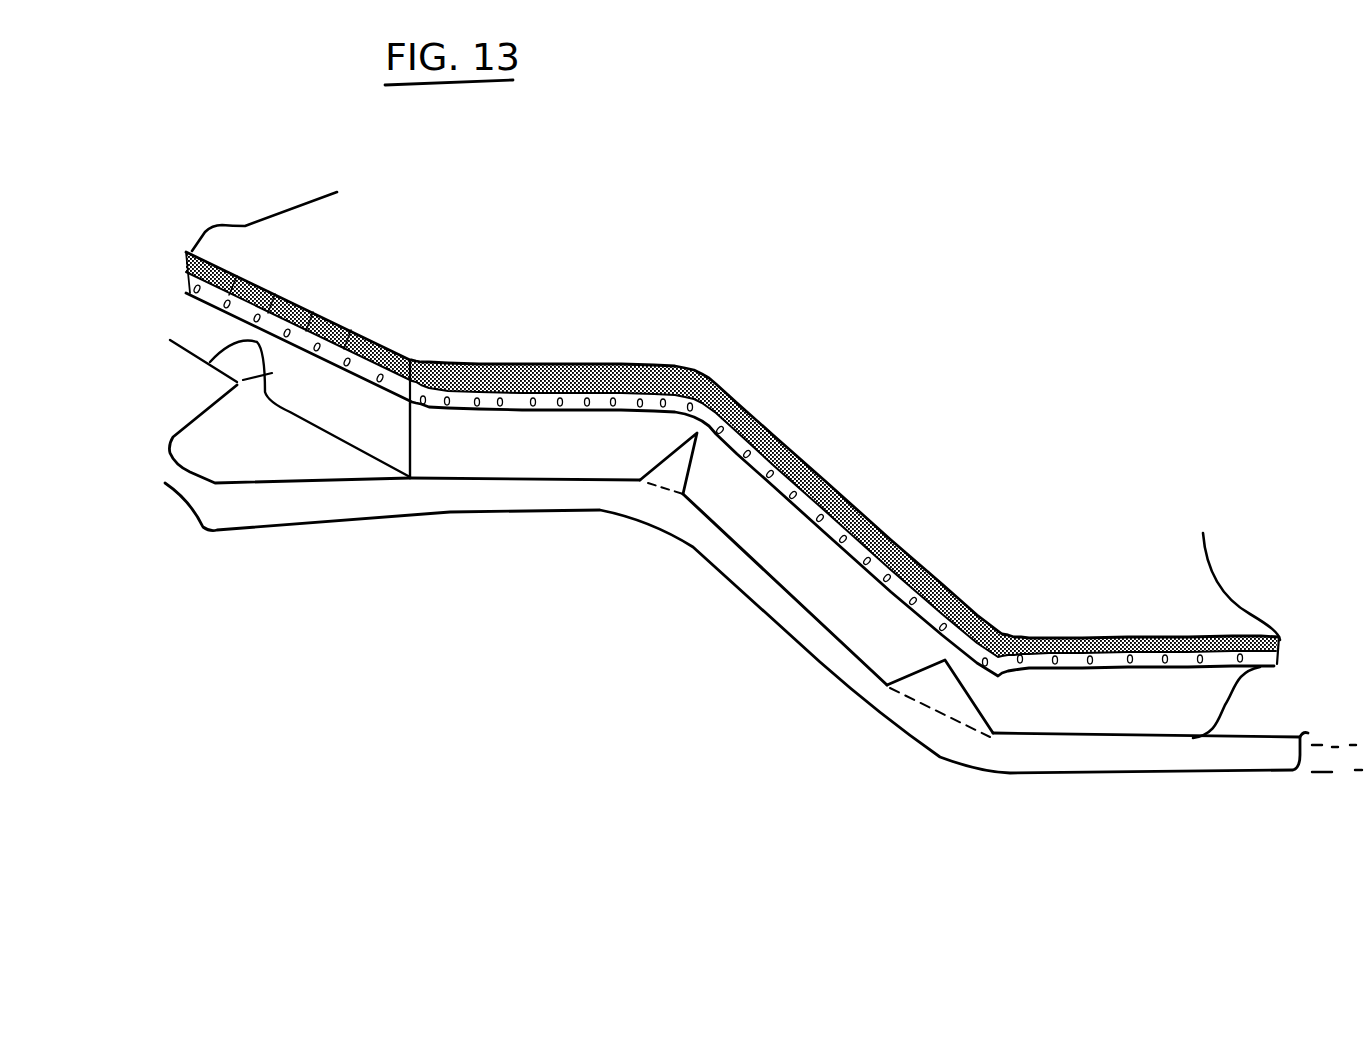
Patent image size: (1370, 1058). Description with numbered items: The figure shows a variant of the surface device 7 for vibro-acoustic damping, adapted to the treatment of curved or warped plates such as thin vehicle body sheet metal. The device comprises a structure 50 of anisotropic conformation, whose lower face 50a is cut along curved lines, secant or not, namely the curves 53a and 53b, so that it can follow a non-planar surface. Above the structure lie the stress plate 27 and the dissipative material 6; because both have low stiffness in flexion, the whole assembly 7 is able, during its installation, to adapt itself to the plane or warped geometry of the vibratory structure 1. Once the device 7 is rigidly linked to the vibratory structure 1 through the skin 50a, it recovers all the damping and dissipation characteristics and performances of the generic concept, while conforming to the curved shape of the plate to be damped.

The vibratory structure 1 is at (1109, 765).
The dissipative material 6 is at (863, 517).
The surface device 7 is at (950, 253).
The stress plate 27 is at (780, 443).
The structure 50 is at (583, 432).
The lower face 50a is at (577, 478).
The curved line 53a is at (653, 483).
The curved line 53b is at (920, 693).